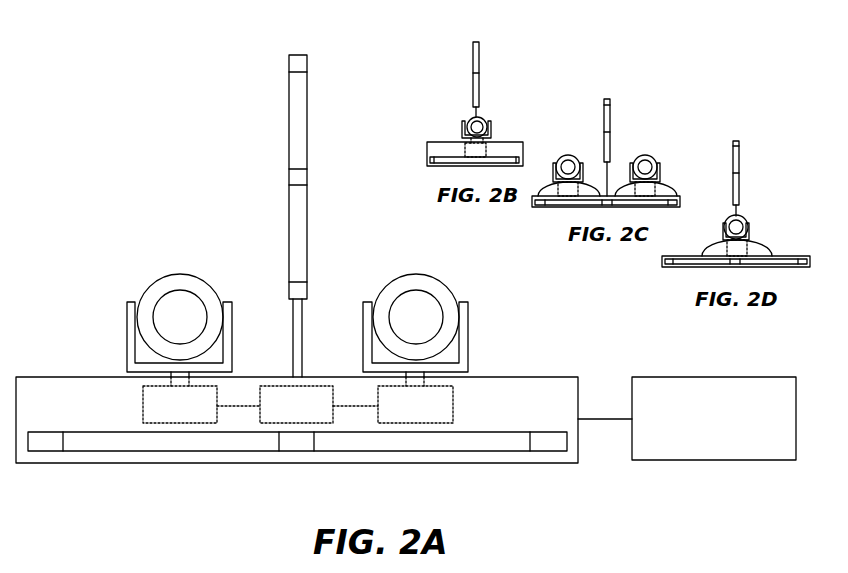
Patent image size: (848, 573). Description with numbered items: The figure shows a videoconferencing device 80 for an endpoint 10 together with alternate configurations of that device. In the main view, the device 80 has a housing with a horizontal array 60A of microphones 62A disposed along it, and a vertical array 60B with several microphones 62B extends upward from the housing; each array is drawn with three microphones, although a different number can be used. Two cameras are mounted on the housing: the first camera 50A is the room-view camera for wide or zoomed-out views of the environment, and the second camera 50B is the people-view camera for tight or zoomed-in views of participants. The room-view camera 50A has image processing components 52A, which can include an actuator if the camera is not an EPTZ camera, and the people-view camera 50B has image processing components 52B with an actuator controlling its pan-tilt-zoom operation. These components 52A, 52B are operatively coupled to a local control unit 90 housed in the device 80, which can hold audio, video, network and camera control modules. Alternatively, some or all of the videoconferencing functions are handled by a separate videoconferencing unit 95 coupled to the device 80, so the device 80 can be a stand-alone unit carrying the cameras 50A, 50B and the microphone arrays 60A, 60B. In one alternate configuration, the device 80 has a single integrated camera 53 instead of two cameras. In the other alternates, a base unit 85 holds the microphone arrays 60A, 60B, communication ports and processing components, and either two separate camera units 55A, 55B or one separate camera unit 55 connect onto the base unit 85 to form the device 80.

In FIG. 2A, the endpoint 10 is at (110, 163).
In FIG. 2A, the first camera 50A is at (173, 256).
In FIG. 2A, the second camera 50B is at (404, 266).
In FIG. 2A, the image processing components 52A is at (200, 424).
In FIG. 2A, the image processing components 52B is at (438, 424).
In FIG. 2B, the integrated camera 53 is at (466, 118).
In FIG. 2D, the camera unit 55 is at (751, 232).
In FIG. 2C, the separate camera unit 55A is at (562, 158).
In FIG. 2C, the separate camera unit 55B is at (649, 158).
In FIG. 2A, the horizontal array 60A is at (123, 452).
In FIG. 2B, the horizontal array 60A is at (430, 155).
In FIG. 2A, the vertical array 60B is at (289, 141).
In FIG. 2B, the vertical array 60B is at (472, 46).
In FIG. 2A, the microphones 62A is at (45, 455).
In FIG. 2A, the microphones 62B is at (289, 63).
In FIG. 2B, the videoconferencing device 80 is at (512, 75).
In FIG. 2C, the videoconferencing device 80 is at (665, 108).
In FIG. 2D, the videoconferencing device 80 is at (752, 162).
In FIG. 2C, the base unit 85 is at (545, 208).
In FIG. 2D, the base unit 85 is at (672, 269).
In FIG. 2A, the local control unit 90 is at (325, 425).
In FIG. 2A, the videoconferencing unit 95 is at (739, 461).